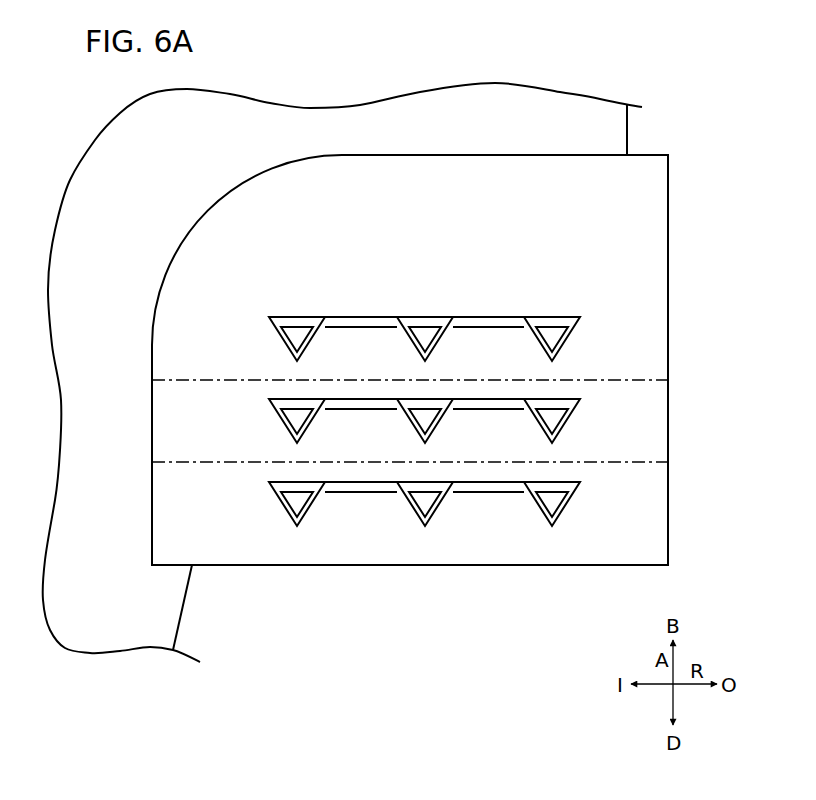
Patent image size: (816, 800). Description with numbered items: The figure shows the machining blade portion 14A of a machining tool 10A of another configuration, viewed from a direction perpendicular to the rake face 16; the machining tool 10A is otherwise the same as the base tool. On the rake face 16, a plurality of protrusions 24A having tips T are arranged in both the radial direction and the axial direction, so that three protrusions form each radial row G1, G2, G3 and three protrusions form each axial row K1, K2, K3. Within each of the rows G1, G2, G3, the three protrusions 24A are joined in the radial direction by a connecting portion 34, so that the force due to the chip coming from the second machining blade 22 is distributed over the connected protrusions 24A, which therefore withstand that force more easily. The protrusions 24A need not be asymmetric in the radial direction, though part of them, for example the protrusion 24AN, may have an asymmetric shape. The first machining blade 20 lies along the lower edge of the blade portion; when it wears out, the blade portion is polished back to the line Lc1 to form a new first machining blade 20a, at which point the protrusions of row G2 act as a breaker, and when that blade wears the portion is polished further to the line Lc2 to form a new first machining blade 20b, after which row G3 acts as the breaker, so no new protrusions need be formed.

The machining tool 10A is at (636, 133).
The machining blade portion 14A is at (168, 234).
The rake face 16 is at (172, 548).
The first machining blade 20 is at (255, 566).
The new first machining blade 20a is at (109, 507).
The new first machining blade 20b is at (110, 425).
The second machining blade 22 is at (669, 287).
The protrusion 24A is at (286, 334).
The protrusion 24AN is at (535, 502).
The connecting portion 34 is at (358, 318).
The tip T is at (301, 361).
The row K1 is at (298, 310).
The row K2 is at (426, 310).
The row K3 is at (551, 310).
The row G1 is at (632, 518).
The row G2 is at (632, 436).
The row G3 is at (632, 352).
The line Lc1 is at (152, 465).
The line Lc2 is at (152, 382).